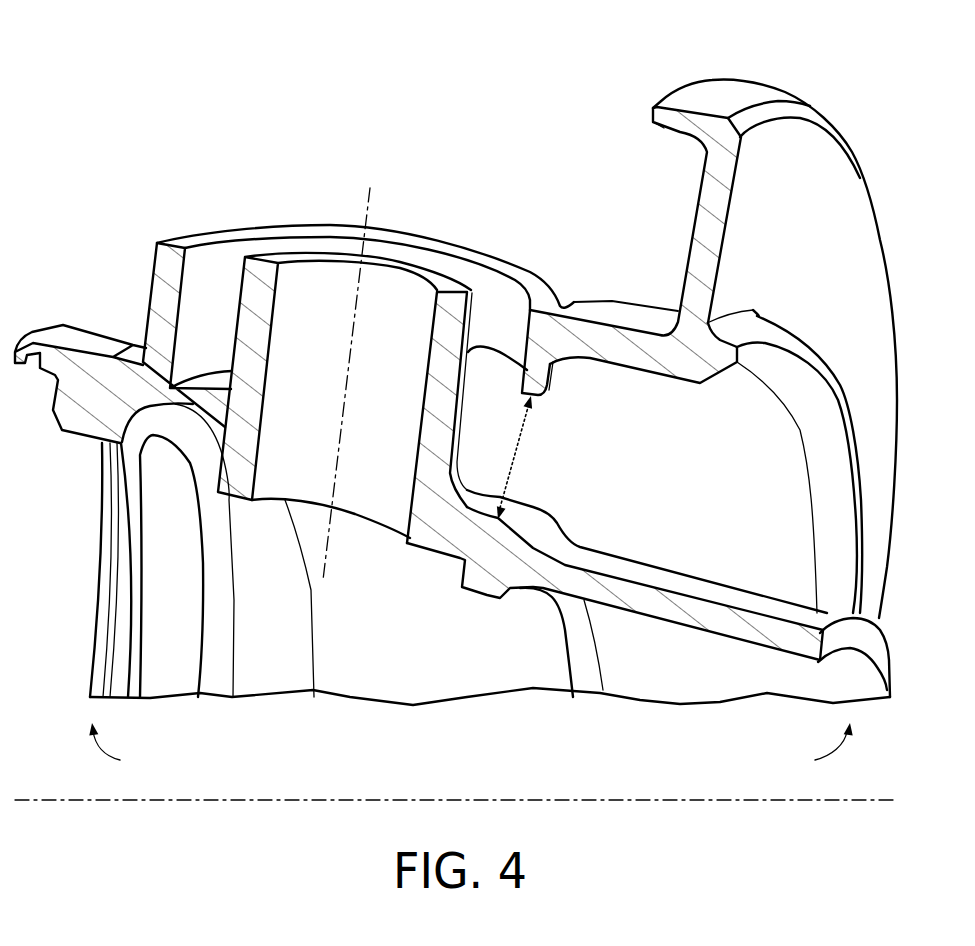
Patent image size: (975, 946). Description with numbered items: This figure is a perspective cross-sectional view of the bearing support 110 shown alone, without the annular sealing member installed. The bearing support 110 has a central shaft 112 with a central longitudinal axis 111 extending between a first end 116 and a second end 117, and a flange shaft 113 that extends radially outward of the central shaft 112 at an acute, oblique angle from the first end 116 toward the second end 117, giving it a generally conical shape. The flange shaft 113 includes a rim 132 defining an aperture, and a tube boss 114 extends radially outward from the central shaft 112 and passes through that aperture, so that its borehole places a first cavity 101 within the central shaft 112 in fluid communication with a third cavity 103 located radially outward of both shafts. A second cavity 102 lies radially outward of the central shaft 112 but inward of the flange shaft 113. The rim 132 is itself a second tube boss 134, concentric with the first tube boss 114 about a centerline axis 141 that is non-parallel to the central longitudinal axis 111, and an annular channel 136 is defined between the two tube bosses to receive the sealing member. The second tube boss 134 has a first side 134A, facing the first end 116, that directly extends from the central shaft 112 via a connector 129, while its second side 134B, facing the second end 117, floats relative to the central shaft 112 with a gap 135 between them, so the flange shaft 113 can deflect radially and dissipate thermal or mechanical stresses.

The first cavity 101 is at (470, 656).
The second cavity 102 is at (225, 361).
The third cavity 103 is at (557, 176).
The bearing support 110 is at (95, 92).
The central longitudinal axis 111 is at (627, 800).
The central shaft 112 is at (678, 580).
The flange shaft 113 is at (567, 300).
The tube boss 114 is at (443, 355).
The first end 116 is at (125, 759).
The second end 117 is at (814, 759).
The connector 129 is at (140, 457).
The rim 132 is at (201, 231).
The second tube boss 134 is at (147, 253).
The first side 134A is at (165, 317).
The second side 134B is at (538, 391).
The gap 135 is at (513, 456).
The annular channel 136 is at (225, 246).
The centerline axis 141 is at (353, 325).